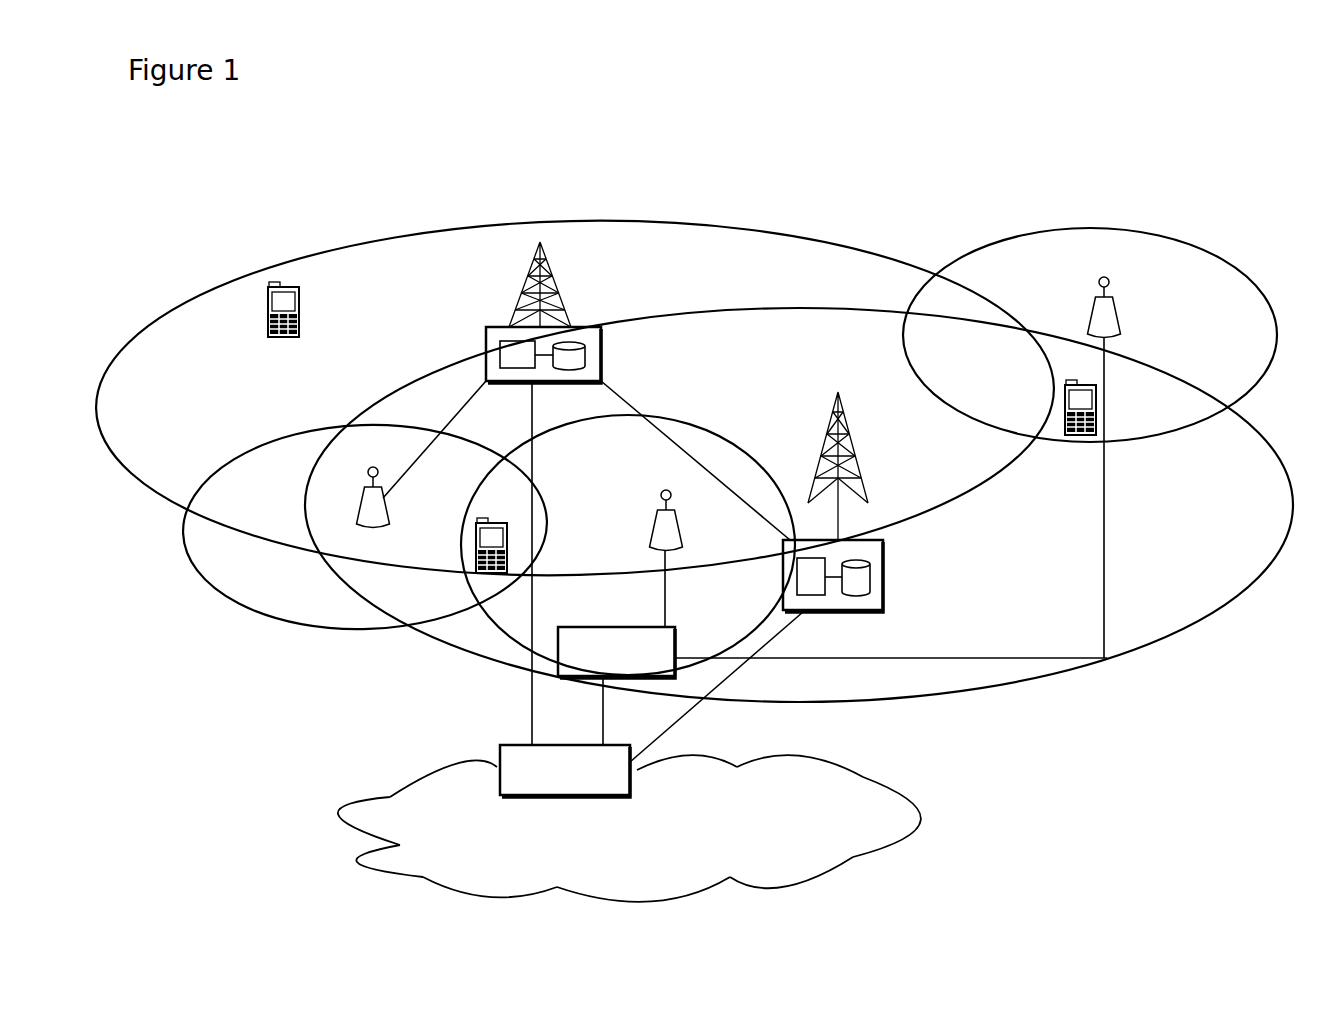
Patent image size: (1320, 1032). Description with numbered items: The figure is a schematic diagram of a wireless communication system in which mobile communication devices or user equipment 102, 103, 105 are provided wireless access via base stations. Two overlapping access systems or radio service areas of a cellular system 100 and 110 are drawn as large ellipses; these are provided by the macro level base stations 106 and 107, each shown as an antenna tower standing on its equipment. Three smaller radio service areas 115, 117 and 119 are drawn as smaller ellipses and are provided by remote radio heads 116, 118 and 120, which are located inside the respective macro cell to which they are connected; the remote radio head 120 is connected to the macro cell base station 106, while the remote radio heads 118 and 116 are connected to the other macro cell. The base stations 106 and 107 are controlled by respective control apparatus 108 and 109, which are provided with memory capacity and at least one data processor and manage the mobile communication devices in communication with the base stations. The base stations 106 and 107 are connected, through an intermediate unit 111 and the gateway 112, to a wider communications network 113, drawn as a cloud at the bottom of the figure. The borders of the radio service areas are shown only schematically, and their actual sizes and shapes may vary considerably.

The radio service area of cellular system 100 is at (186, 268).
The mobile communication device 102 is at (268, 330).
The mobile communication device 103 is at (478, 550).
The mobile communication device 105 is at (1078, 437).
The base station 106 is at (523, 292).
The base station 107 is at (858, 468).
The control apparatus 108 is at (485, 343).
The control apparatus 109 is at (873, 602).
The radio service area of cellular system 110 is at (1175, 656).
The base station controller 111 is at (567, 657).
The gateway 112 is at (502, 743).
The wider communications network 113 is at (423, 805).
The smaller radio service area 115 is at (1250, 248).
The remote radio head 116 is at (1088, 308).
The smaller radio service area 117 is at (704, 419).
The remote radio head 118 is at (660, 540).
The smaller radio service area 119 is at (264, 610).
The remote radio head 120 is at (360, 503).